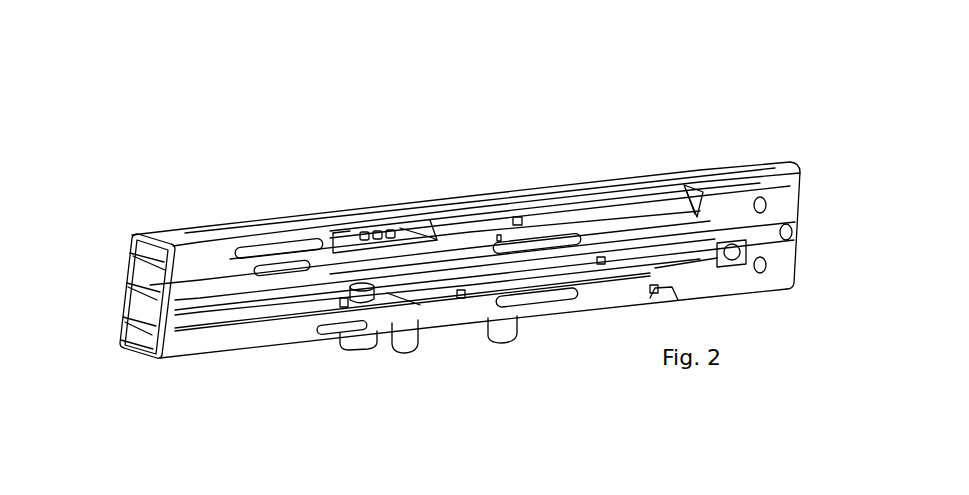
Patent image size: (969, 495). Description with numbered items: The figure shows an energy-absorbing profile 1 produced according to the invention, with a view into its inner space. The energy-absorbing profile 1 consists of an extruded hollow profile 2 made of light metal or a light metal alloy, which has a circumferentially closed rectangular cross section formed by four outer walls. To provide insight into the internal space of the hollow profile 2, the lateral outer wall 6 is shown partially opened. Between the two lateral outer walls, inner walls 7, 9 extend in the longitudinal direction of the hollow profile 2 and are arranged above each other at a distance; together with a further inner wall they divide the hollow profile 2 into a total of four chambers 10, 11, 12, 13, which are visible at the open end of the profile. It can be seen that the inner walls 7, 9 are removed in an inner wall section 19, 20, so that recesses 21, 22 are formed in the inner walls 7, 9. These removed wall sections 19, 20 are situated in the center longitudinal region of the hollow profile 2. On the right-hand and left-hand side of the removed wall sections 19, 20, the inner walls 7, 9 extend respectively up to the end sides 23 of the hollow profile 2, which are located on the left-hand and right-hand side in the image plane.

The energy-absorbing profile 1 is at (623, 100).
The hollow profile 2 is at (220, 347).
The lateral outer wall 6 is at (195, 278).
The inner wall 7 is at (341, 240).
The inner wall 9 is at (384, 298).
The chamber 10 is at (145, 244).
The chamber 11 is at (143, 275).
The chamber 12 is at (141, 306).
The chamber 13 is at (145, 351).
The inner wall section 19 is at (551, 205).
The inner wall section 20 is at (528, 302).
The recess 21 is at (443, 232).
The recess 22 is at (598, 283).
The end side 23 is at (805, 163).